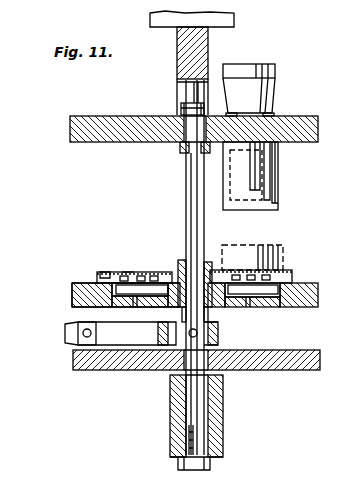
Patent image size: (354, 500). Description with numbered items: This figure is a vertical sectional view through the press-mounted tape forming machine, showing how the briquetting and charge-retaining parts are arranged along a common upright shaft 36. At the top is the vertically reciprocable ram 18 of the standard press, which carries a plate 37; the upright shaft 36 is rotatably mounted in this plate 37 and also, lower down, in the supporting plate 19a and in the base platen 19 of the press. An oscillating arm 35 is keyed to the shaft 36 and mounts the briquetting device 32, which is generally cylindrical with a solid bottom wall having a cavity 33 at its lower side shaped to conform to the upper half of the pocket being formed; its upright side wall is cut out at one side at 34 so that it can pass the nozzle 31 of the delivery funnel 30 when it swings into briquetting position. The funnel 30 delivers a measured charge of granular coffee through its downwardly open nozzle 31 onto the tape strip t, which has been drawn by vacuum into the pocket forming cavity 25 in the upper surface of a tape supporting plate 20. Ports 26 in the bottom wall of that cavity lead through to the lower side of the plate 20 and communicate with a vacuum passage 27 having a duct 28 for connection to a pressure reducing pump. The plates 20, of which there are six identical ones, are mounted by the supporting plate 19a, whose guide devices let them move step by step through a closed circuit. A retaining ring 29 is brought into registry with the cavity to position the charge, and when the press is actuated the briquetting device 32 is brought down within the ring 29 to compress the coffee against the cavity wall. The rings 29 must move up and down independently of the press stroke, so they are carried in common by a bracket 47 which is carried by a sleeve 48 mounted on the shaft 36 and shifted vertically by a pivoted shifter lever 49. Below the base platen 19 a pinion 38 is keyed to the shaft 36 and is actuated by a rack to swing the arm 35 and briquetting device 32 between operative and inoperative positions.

The ram 18 is at (232, 20).
The delivery funnel 30 is at (276, 73).
The plate 37 is at (97, 115).
The oscillating arm 35 is at (185, 150).
The upright shaft 36 is at (186, 180).
The cavity 33 is at (240, 212).
The cut-out 34 is at (258, 186).
The nozzle 31 is at (262, 165).
The briquetting device 32 is at (276, 170).
The ring 29 is at (270, 248).
The bracket 47 is at (212, 262).
The tape supporting plate 20 is at (90, 276).
The tape strip t is at (160, 268).
The pocket forming cavity 25 is at (104, 270).
The ports 26 is at (130, 270).
The vacuum passage 27 is at (114, 290).
The supporting plate 19a is at (72, 290).
The duct 28 is at (135, 306).
The shifter lever 49 is at (61, 336).
The sleeve 48 is at (208, 312).
The base platen 19 is at (98, 368).
The pinion 38 is at (222, 408).